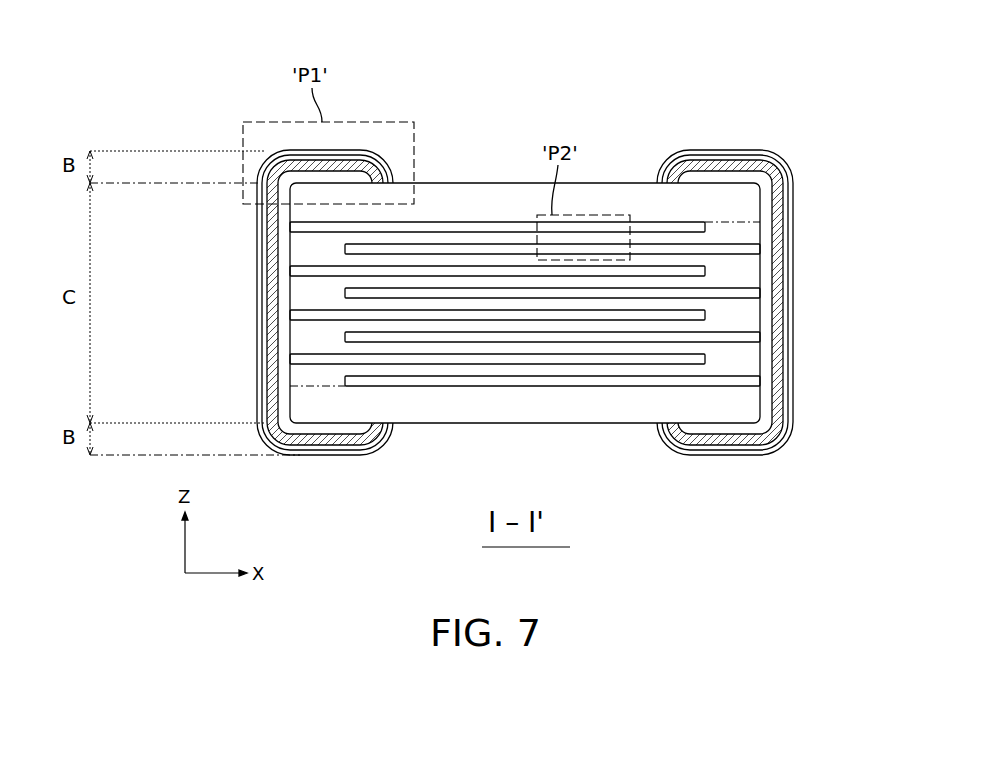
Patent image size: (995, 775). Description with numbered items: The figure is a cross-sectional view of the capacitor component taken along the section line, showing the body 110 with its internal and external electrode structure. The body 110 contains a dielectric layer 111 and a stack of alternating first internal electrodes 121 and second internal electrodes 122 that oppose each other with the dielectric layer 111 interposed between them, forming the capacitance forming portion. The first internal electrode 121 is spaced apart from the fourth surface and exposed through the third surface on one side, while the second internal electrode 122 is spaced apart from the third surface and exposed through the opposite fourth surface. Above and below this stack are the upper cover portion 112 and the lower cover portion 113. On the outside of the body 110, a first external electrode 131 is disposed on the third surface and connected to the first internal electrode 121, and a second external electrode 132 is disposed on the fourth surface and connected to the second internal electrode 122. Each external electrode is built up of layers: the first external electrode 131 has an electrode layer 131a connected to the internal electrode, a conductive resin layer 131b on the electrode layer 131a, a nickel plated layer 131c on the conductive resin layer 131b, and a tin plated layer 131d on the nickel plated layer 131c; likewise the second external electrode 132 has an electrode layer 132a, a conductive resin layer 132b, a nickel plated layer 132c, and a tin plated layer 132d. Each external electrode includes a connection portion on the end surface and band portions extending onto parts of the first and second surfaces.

The body 110 is at (458, 183).
The dielectric layer 111 is at (424, 265).
The upper cover portion 112 is at (510, 197).
The lower cover portion 113 is at (523, 408).
The first internal electrode 121 is at (587, 226).
The second internal electrode 122 is at (650, 250).
The first external electrode 131 is at (409, 321).
The electrode layer 131a is at (283, 327).
The conductive resin layer 131b is at (256, 348).
The Ni plated layer 131c is at (256, 376).
The Sn plated layer 131d is at (436, 387).
The second external electrode 132 is at (641, 317).
The electrode layer 132a is at (776, 291).
The conductive resin layer 132b is at (790, 318).
The Ni plated layer 132c is at (790, 346).
The Sn plated layer 132d is at (790, 374).